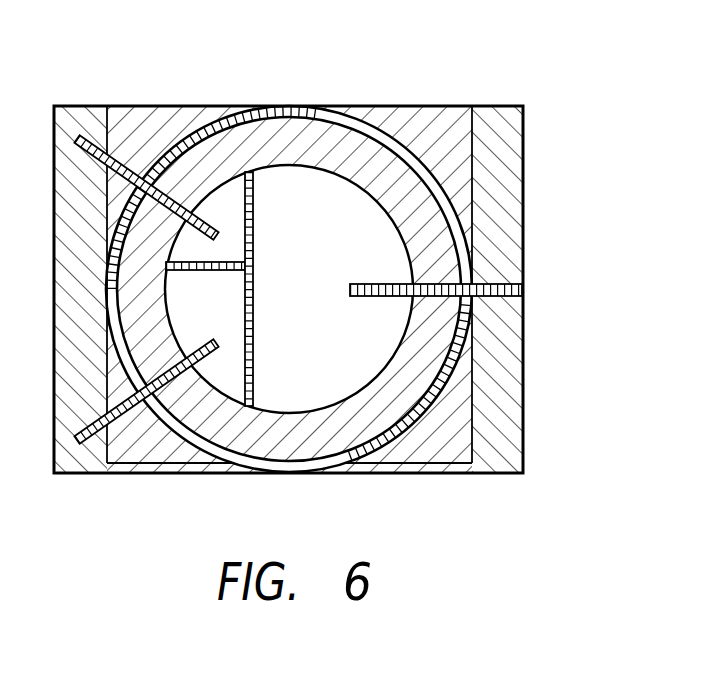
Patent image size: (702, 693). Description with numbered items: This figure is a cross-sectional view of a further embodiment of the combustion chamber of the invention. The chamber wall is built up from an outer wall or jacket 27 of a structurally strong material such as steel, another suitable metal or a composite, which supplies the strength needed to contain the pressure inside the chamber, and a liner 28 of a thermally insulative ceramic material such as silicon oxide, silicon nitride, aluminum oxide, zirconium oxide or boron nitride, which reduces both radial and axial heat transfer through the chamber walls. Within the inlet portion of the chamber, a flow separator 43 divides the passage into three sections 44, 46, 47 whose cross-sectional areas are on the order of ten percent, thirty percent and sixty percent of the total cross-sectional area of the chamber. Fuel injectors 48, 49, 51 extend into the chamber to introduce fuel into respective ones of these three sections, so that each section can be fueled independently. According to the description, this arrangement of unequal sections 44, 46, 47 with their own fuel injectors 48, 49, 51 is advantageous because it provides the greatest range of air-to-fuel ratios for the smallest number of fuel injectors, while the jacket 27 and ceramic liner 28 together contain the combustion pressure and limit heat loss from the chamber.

The outer wall or jacket 27 is at (357, 117).
The liner 28 is at (337, 427).
The flow separator 43 is at (254, 272).
The section 44 is at (222, 210).
The section 46 is at (221, 322).
The section 47 is at (329, 360).
The fuel injector 48 is at (108, 265).
The fuel injector 49 is at (115, 417).
The fuel injector 51 is at (455, 258).